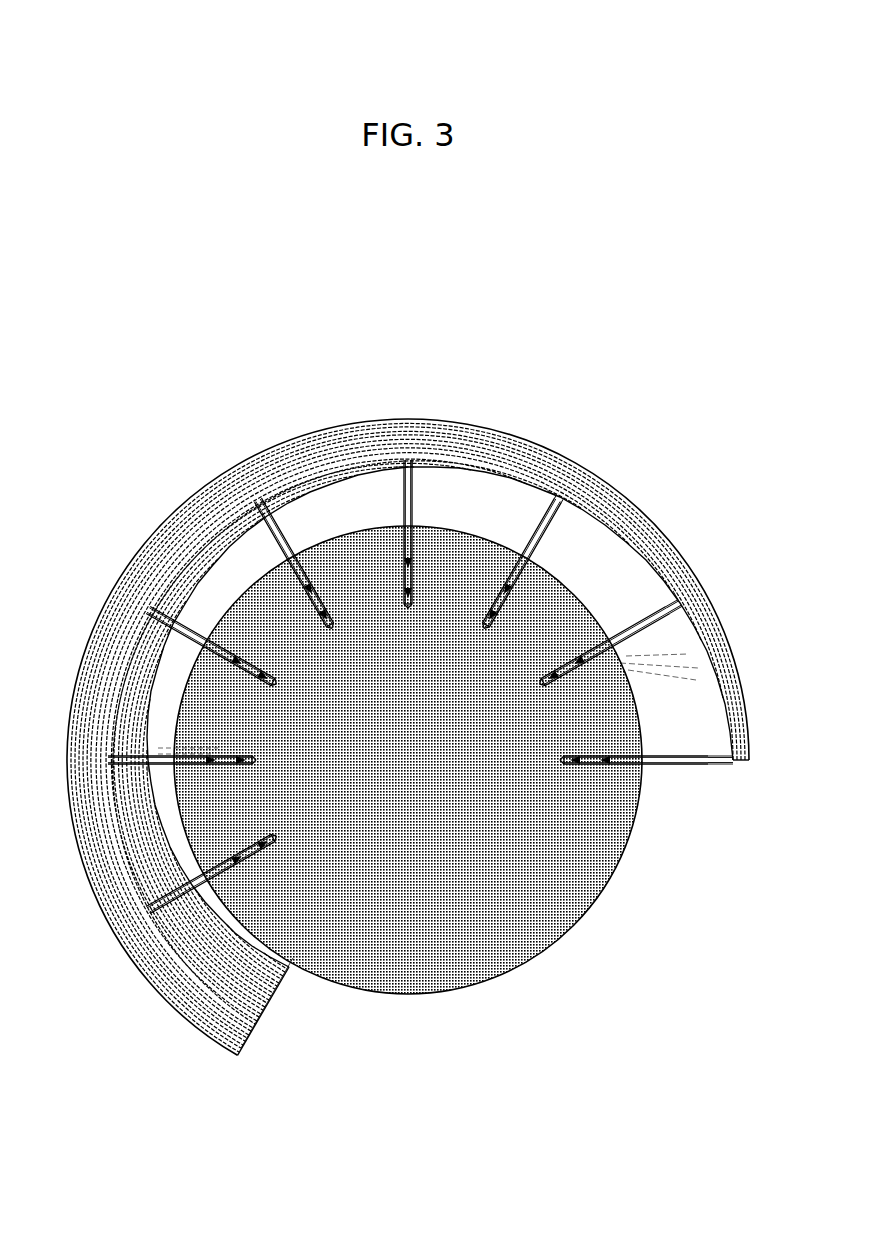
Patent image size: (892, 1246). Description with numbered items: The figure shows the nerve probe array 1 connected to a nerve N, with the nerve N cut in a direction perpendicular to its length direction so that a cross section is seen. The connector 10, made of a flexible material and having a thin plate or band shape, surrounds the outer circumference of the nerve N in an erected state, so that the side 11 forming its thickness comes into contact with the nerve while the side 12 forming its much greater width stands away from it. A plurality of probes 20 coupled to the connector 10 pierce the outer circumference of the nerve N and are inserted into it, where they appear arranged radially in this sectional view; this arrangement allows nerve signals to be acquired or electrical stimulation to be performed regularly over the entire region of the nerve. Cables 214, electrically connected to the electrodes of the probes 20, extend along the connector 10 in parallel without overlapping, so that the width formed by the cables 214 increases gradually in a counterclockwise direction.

The nerve probe array 1 is at (537, 363).
The connector 10 is at (688, 663).
The side forming a thickness 11 is at (243, 922).
The side forming a width 12 is at (172, 817).
The probe 20 is at (603, 760).
The cable 214 is at (61, 722).
The nerve N is at (560, 926).